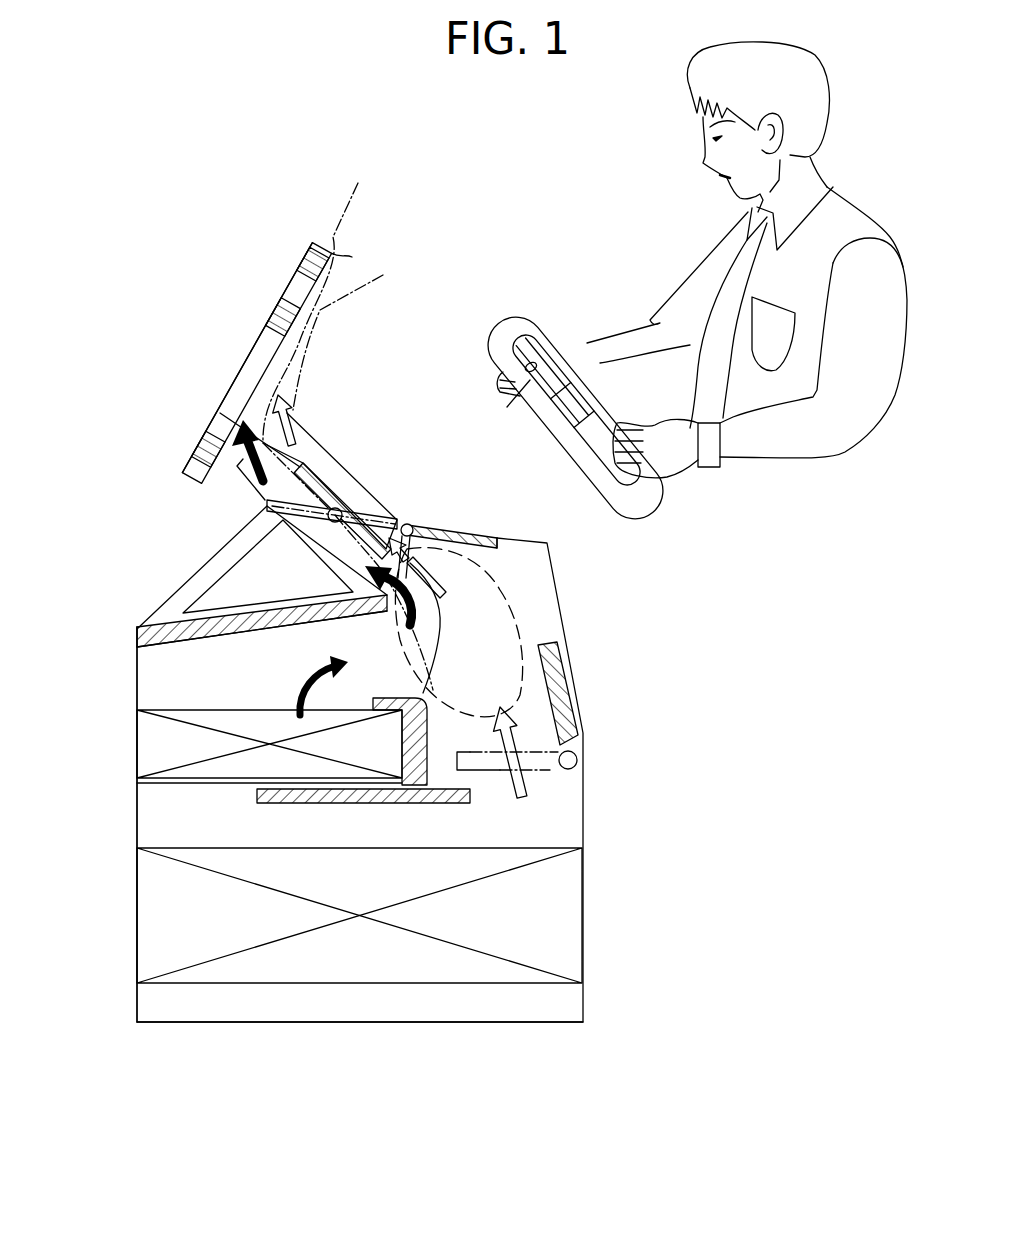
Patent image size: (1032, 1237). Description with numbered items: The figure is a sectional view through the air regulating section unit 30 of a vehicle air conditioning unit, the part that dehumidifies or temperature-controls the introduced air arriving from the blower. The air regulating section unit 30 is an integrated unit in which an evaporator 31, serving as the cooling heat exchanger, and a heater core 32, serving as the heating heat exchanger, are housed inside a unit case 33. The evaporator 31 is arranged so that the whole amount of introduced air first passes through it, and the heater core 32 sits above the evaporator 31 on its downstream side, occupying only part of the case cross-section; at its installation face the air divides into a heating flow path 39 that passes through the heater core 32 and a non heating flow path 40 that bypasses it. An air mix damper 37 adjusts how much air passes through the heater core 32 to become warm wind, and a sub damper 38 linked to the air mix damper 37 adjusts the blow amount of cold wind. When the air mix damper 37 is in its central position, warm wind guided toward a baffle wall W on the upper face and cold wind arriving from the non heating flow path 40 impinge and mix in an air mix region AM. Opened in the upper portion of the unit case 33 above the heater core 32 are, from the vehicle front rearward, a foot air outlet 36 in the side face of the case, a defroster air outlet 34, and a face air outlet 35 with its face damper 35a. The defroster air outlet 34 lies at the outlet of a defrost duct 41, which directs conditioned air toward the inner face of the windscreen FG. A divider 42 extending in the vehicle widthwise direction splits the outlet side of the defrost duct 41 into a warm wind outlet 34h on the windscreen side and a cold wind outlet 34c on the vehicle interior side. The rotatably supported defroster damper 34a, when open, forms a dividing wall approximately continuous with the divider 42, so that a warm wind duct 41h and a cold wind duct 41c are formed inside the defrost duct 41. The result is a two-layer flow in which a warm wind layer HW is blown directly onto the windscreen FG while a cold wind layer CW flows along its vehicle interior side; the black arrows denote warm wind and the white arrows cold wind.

The air regulating section unit 30 is at (188, 1043).
The evaporator 31 is at (557, 932).
The heater core 32 is at (165, 743).
The unit case 33 is at (547, 1027).
The defroster air outlet 34 is at (240, 414).
The defroster damper 34a is at (320, 485).
The cold wind outlet 34c is at (293, 410).
The warm wind outlet 34h is at (233, 463).
The face air outlet 35 is at (470, 524).
The face damper 35a is at (497, 538).
The foot air outlet 36 is at (235, 573).
The air mix damper 37 is at (457, 804).
The sub damper 38 is at (573, 710).
The heating flow path 39 is at (217, 783).
The non heating flow path 40 is at (507, 793).
The defrost duct 41 is at (310, 427).
The cold wind duct 41c is at (375, 492).
The warm wind duct 41h is at (280, 506).
The divider 42 is at (317, 460).
The warm wind layer HW is at (324, 333).
The cold wind layer CW is at (361, 328).
The windscreen FG is at (258, 340).
The baffle wall W is at (205, 644).
The air mix region AM is at (490, 583).